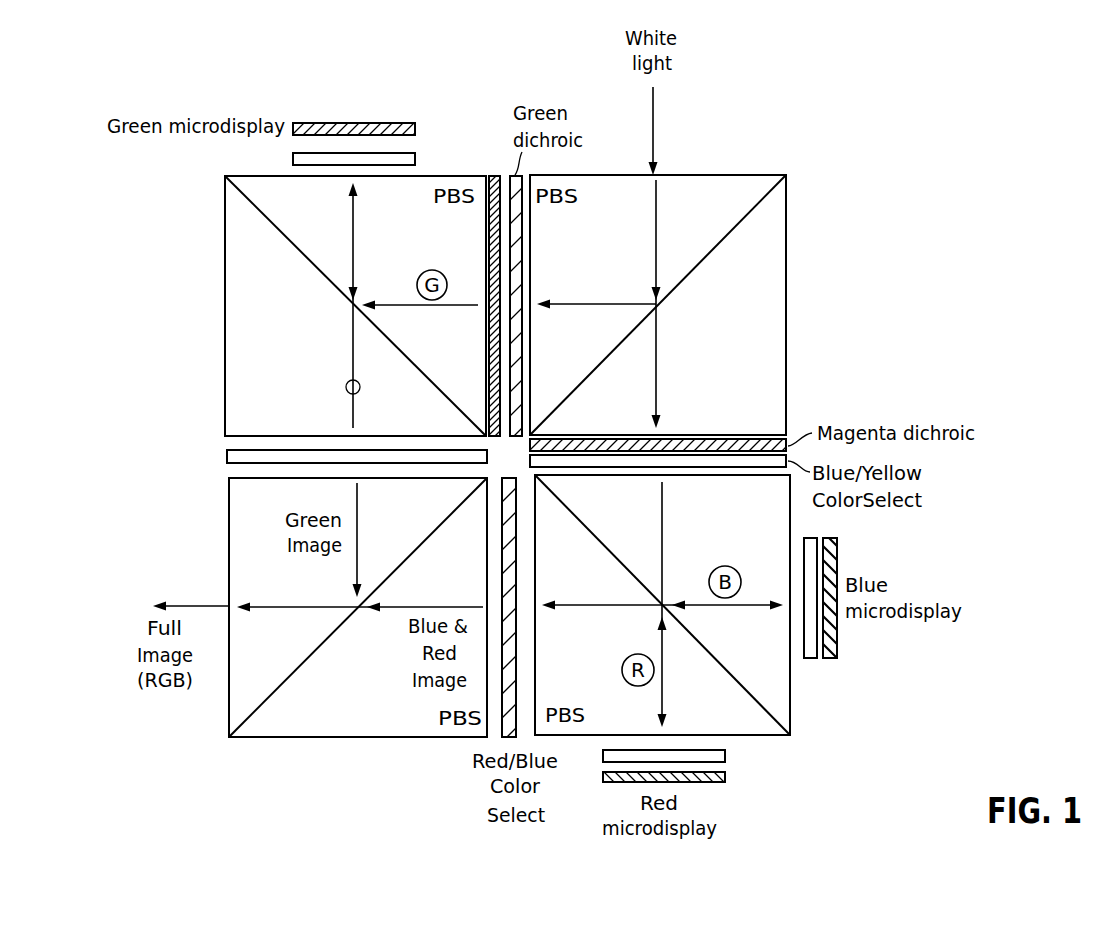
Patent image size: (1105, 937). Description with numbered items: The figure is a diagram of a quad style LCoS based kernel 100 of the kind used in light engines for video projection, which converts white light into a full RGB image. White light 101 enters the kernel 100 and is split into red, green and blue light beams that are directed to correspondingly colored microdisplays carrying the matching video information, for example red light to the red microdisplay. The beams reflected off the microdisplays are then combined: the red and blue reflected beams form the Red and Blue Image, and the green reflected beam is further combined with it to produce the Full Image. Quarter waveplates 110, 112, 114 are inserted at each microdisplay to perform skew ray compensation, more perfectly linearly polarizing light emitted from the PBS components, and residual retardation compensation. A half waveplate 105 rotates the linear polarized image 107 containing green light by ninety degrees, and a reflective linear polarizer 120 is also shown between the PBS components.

The quad style kernel 100 is at (333, 782).
The white light 101 is at (655, 100).
The half waveplate 105 is at (296, 449).
The linear polarized image 107 is at (346, 386).
The quarter waveplate 110 is at (292, 160).
The quarter waveplate 112 is at (810, 662).
The quarter waveplate 114 is at (727, 755).
The reflective linear polarizer 120 is at (495, 175).